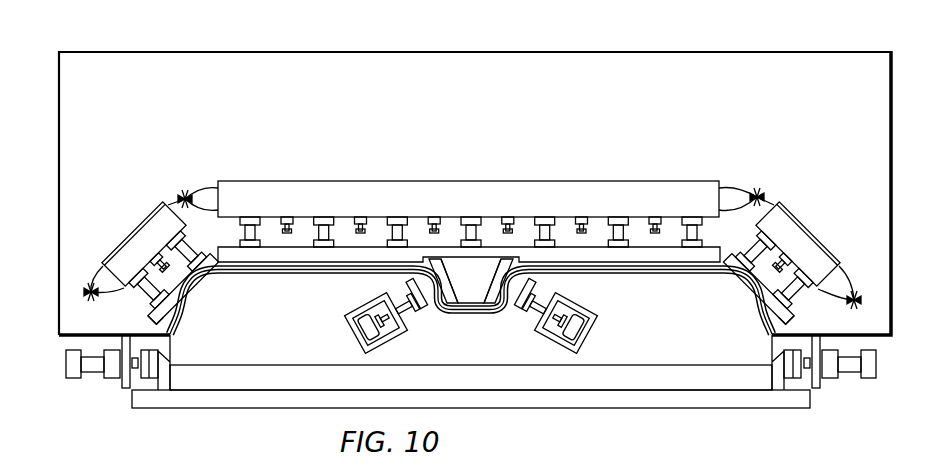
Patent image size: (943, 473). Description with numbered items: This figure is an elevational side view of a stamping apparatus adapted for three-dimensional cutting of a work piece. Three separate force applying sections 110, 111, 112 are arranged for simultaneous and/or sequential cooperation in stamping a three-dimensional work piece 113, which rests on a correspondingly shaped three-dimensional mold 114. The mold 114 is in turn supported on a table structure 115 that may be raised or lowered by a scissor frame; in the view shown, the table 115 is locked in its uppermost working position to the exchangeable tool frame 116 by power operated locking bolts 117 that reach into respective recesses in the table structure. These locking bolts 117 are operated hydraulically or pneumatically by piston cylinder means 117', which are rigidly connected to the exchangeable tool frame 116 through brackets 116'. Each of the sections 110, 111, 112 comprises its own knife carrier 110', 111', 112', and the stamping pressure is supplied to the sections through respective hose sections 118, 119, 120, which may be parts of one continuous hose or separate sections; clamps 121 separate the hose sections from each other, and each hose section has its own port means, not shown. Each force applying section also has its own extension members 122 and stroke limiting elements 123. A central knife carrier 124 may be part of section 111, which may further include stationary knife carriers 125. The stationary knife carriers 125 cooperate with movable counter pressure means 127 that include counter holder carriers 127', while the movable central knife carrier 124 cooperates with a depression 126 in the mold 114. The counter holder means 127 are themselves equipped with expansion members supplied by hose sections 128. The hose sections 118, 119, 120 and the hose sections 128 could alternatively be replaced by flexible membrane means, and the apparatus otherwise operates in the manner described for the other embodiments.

The force applying section 110 is at (139, 244).
The knife carrier 110' is at (134, 320).
The force applying section 111 is at (468, 186).
The knife carrier 111' is at (469, 226).
The force applying section 112 is at (801, 244).
The knife carrier 112' is at (809, 320).
The work piece 113 is at (181, 309).
The mold 114 is at (688, 342).
The table structure 115 is at (612, 410).
The exchangeable tool frame 116 is at (475, 180).
The bracket 116' is at (472, 382).
The locking bolt 117 is at (461, 383).
The piston cylinder means 117' is at (474, 364).
The hose section 118 is at (178, 203).
The hose section 119 is at (725, 193).
The hose section 120 is at (842, 286).
The clamp 121 is at (184, 195).
The extension member 122 is at (249, 235).
The stroke limiting element 123 is at (284, 222).
The central knife carrier 124 is at (461, 302).
The stationary knife carrier 125 is at (500, 287).
The depression 126 is at (487, 302).
The counter pressure means 127 is at (467, 320).
The counter holder carrier 127' is at (487, 295).
The hose section 128 is at (362, 330).